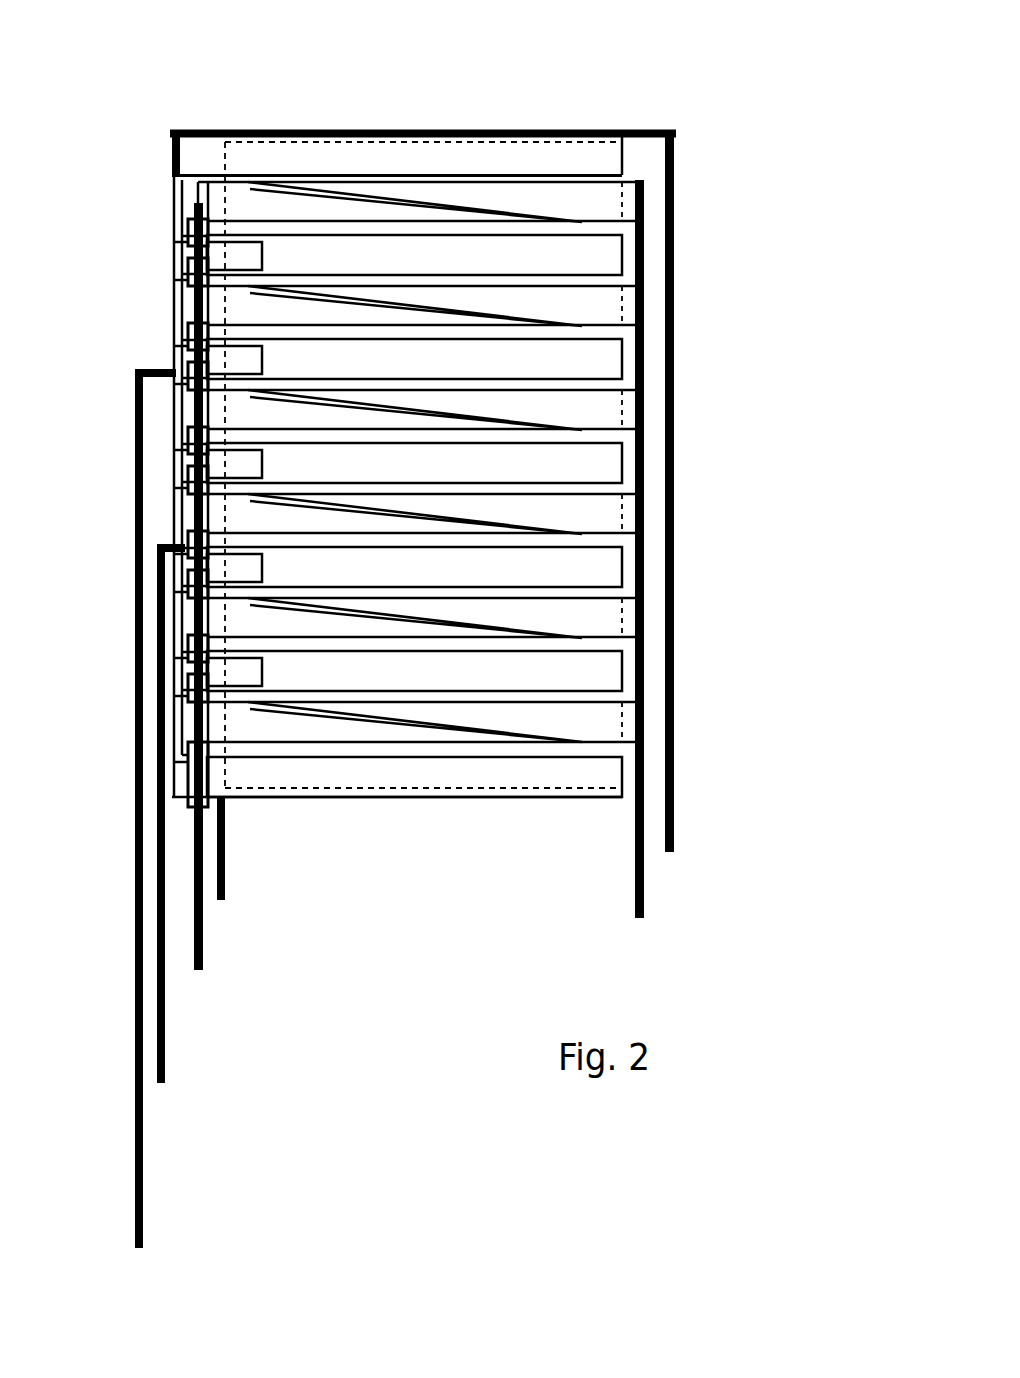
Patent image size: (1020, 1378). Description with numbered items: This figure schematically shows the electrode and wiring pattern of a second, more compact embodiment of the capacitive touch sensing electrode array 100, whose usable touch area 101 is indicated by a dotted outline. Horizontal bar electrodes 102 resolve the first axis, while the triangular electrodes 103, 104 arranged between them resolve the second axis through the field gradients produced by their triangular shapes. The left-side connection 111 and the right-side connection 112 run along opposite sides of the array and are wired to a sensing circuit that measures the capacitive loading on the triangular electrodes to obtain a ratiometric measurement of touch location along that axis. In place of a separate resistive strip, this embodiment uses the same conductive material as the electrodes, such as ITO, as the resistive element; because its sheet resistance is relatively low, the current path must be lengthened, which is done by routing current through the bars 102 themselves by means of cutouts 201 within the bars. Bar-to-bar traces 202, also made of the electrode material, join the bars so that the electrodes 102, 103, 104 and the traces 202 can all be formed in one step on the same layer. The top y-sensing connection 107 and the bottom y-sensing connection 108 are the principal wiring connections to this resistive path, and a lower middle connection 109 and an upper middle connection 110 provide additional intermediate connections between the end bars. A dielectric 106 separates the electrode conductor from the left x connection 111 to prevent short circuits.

The electrode array 100 is at (590, 80).
The usable touch area 101 is at (225, 152).
The electrodes 102 is at (608, 567).
The electrodes 103 is at (245, 725).
The electrodes 104 is at (608, 512).
The dielectric 106 is at (190, 365).
The top y-sensing connection 107 is at (673, 793).
The bottom y-sensing connection 108 is at (225, 843).
The lower middle connection 109 is at (165, 1032).
The upper middle connection 110 is at (143, 1188).
The left-side connection 111 is at (203, 943).
The right-side connection 112 is at (645, 878).
The cutouts 201 is at (164, 251).
The bar-to-bar traces 202 is at (175, 425).